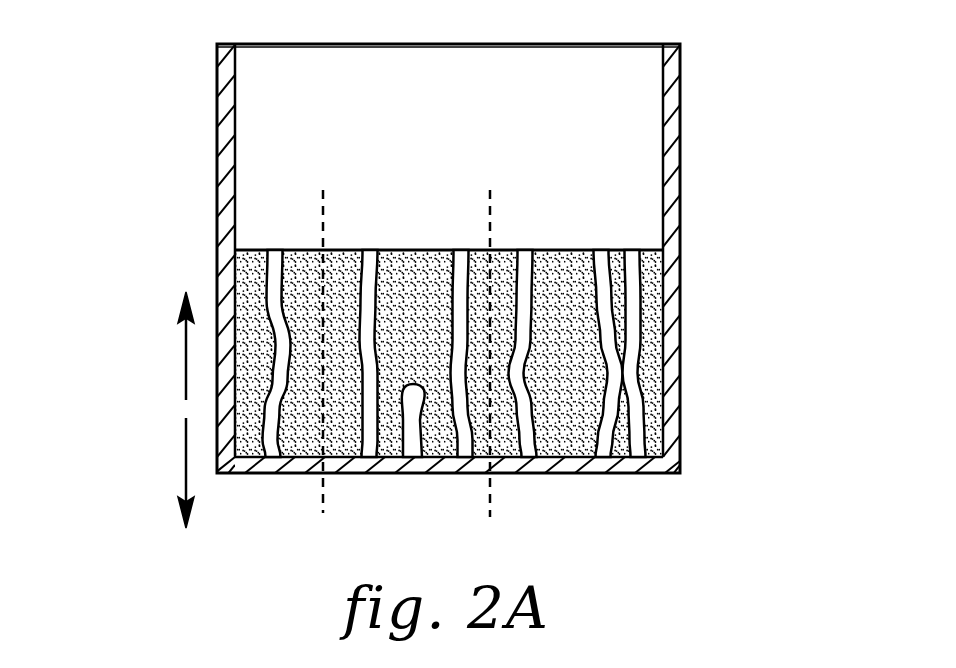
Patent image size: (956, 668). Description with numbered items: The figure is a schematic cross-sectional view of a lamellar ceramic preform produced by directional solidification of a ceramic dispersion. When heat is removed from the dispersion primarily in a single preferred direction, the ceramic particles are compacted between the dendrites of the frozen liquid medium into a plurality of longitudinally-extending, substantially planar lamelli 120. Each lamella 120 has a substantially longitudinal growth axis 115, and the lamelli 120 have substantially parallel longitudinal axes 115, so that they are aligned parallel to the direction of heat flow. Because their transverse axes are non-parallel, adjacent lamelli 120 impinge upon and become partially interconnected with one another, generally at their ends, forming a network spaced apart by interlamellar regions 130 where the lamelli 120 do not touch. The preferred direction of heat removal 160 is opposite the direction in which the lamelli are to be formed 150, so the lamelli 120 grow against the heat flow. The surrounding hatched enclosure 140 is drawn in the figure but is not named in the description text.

The substantially longitudinal growth axis 115 is at (490, 208).
The lamella 120 is at (560, 425).
The interlamellar region 130 is at (363, 458).
The container 140 is at (681, 208).
The direction in which the lamelli are to be formed 150 is at (186, 333).
The preferred direction of heat removal 160 is at (186, 457).